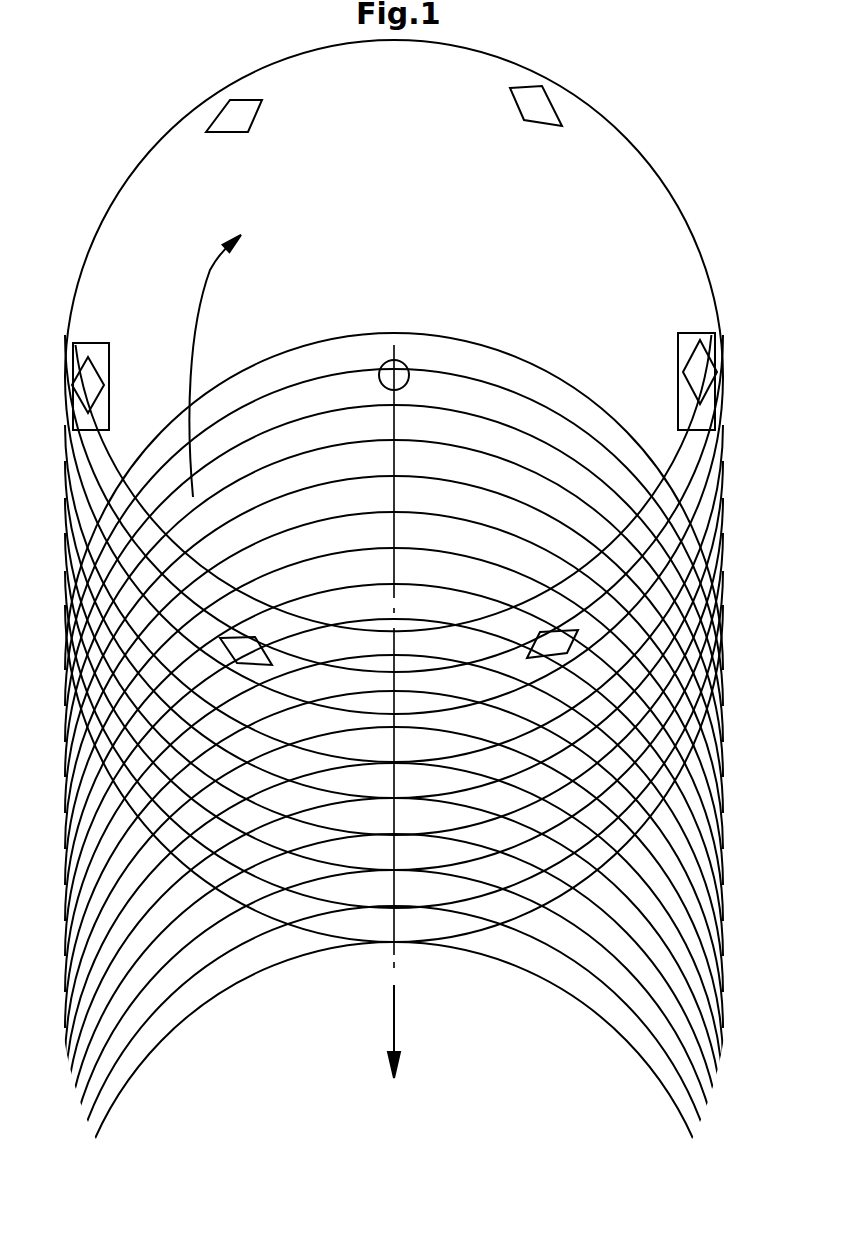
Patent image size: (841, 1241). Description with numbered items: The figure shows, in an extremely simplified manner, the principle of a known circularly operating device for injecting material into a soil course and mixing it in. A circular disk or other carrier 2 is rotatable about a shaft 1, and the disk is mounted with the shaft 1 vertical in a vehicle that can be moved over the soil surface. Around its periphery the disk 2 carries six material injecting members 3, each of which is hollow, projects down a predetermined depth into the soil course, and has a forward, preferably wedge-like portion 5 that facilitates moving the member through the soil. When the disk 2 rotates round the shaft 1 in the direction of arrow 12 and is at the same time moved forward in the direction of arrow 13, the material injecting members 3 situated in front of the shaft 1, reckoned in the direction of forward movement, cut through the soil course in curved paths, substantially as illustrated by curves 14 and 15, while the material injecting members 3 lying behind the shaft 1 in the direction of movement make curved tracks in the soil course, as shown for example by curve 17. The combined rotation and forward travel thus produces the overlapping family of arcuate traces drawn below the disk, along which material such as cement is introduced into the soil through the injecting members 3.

The shaft 1 is at (406, 363).
The circular disk 2 is at (653, 196).
The material injecting members 3 is at (541, 98).
The wedge-like portion 5 is at (705, 403).
The arrow indicating direction of rotation 12 is at (212, 278).
The arrow indicating direction of forward movement 13 is at (398, 995).
The curve 14 is at (533, 772).
The curve 15 is at (598, 798).
The curve 17 is at (673, 1038).